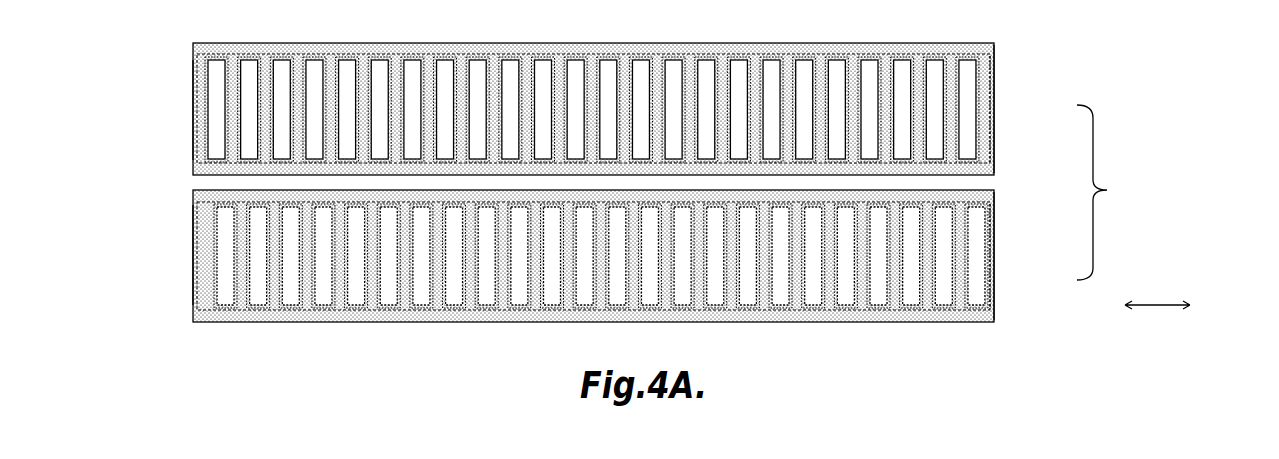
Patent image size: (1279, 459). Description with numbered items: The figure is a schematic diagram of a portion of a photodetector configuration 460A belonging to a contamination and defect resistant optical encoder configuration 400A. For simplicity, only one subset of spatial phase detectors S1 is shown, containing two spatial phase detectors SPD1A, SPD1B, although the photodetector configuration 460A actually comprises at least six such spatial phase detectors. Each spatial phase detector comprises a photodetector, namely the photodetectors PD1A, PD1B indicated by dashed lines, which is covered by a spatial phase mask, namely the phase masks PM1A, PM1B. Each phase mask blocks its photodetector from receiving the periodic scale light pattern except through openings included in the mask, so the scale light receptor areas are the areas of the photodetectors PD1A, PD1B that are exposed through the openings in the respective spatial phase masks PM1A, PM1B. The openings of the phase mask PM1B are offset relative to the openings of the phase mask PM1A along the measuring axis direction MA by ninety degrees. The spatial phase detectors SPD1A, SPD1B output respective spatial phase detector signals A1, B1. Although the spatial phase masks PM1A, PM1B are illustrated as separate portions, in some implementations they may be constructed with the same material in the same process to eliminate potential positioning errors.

The spatial phase detector signal A1 is at (189, 112).
The spatial phase detector signal B1 is at (189, 258).
The photodetector PD1A is at (843, 58).
The photodetector PD1B is at (832, 308).
The spatial phase mask PM1A is at (994, 62).
The spatial phase mask PM1B is at (995, 225).
The spatial phase detector SPD1A is at (1009, 117).
The spatial phase detector SPD1B is at (1004, 263).
The subset of spatial phase detectors S1 is at (1107, 192).
The photodetector configuration 460A is at (1049, 87).
The contamination and defect resistant optical encoder configuration 400A is at (1161, 48).
The measuring axis direction MA is at (1157, 292).